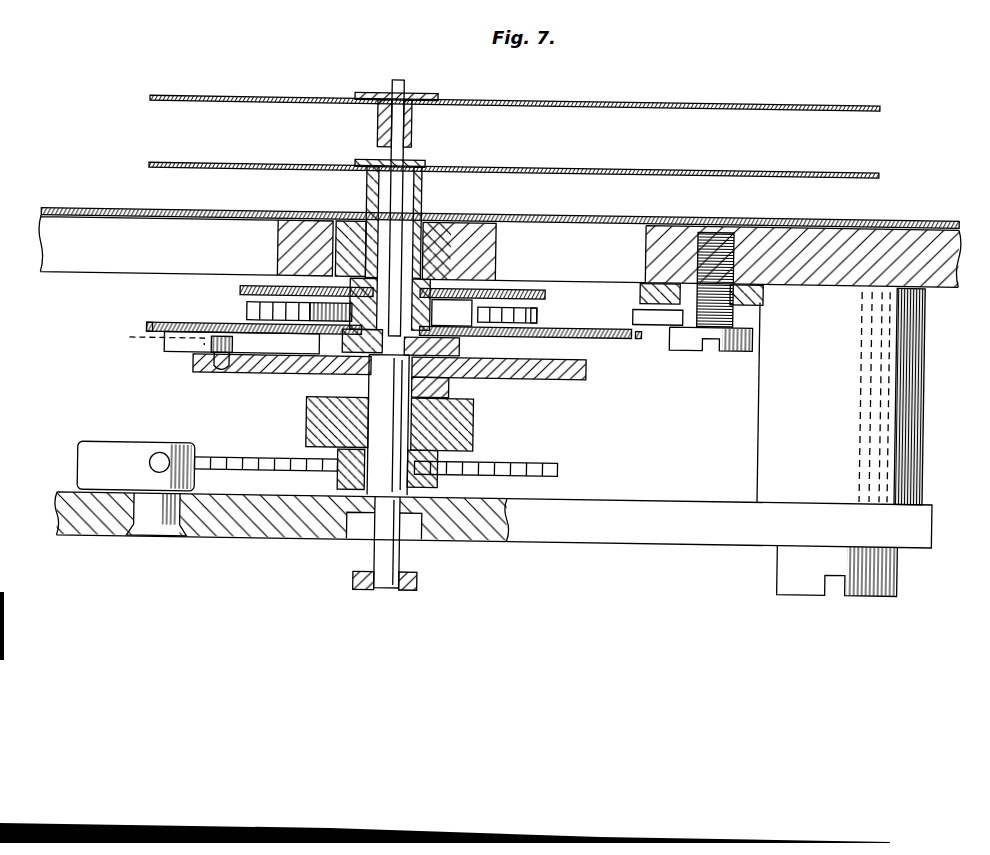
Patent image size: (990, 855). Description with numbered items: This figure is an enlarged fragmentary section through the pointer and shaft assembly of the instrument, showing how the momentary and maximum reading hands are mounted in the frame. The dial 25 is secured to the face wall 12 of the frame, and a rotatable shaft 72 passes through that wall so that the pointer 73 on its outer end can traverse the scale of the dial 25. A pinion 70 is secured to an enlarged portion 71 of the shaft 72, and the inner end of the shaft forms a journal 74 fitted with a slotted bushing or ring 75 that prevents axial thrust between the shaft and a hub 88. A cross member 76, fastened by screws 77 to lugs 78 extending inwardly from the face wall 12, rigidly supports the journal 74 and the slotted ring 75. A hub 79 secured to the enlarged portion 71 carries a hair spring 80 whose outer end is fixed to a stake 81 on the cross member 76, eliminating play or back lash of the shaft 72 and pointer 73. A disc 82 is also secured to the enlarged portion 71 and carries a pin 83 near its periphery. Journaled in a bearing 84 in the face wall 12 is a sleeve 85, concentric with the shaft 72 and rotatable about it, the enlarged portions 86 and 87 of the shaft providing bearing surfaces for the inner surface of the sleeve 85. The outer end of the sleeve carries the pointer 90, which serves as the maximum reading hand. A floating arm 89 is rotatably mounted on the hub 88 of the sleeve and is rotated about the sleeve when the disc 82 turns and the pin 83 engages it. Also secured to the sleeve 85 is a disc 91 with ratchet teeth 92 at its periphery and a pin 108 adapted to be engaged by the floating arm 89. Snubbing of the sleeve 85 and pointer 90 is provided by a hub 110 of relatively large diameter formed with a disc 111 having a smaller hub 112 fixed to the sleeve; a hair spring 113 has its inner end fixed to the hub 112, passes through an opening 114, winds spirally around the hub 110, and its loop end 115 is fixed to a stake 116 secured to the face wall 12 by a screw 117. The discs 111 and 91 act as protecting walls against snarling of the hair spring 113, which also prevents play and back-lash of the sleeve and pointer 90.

The face wall 12 is at (301, 241).
The dial 25 is at (191, 214).
The pinion 70 is at (313, 409).
The enlarged portion of the shaft 71 is at (380, 426).
The rotatable shaft 72 is at (394, 80).
The pointer 73 is at (501, 97).
The journal 74 is at (393, 503).
The slotted bushing or ring 75 is at (411, 553).
The cross member 76 is at (658, 506).
The screws 77 is at (807, 581).
The lugs 78 is at (910, 419).
The hub 79 is at (333, 481).
The hair spring 80 is at (497, 465).
The stake 81 is at (132, 466).
The disc 82 is at (253, 372).
The pin 83 is at (193, 370).
The bearing 84 is at (436, 239).
The sleeve 85 is at (350, 225).
The enlarged portion of the shaft 86 is at (402, 170).
The enlarged portion of the shaft 87 is at (398, 343).
The hub 88 is at (460, 346).
The floating arm 89 is at (165, 348).
The pointer 90 is at (585, 165).
The disc 91 is at (223, 326).
The ratchet teeth 92 is at (148, 329).
The pin 108 is at (150, 334).
The hub 110 is at (503, 303).
The disc 111 is at (542, 292).
The hub 112 is at (432, 313).
The hair spring 113 is at (537, 316).
The opening 114 is at (295, 299).
The loop end 115 is at (647, 310).
The stake 116 is at (760, 297).
The screw 117 is at (697, 344).